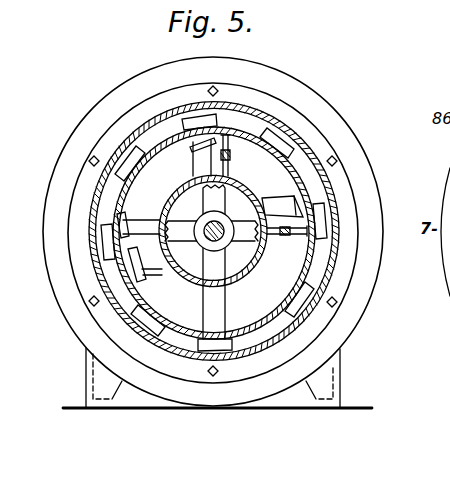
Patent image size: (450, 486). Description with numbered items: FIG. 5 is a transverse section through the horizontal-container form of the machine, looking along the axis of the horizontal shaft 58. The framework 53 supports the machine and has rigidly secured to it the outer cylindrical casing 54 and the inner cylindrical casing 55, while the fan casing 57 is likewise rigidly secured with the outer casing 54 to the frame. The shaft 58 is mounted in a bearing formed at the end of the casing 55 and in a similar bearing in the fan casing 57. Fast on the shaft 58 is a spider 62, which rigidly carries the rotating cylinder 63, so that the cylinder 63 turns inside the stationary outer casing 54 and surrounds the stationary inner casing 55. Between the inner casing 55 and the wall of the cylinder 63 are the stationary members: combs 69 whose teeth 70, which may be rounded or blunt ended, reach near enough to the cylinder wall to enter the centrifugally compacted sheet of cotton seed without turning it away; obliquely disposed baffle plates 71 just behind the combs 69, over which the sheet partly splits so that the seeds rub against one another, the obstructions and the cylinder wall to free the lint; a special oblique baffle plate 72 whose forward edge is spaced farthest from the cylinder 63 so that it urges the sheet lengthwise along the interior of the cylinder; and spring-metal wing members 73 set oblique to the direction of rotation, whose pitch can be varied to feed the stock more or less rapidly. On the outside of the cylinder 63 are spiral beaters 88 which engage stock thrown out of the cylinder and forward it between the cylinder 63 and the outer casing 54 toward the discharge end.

The framework 53 is at (113, 385).
The outer cylindrical casing 54 is at (290, 160).
The inner cylindrical casing 55 is at (249, 182).
The fan casing 57 is at (121, 88).
The horizontal shaft 58 is at (219, 244).
The spider 62 is at (227, 276).
The cylinder 63 is at (117, 188).
The combs 69 is at (238, 150).
The teeth 70 is at (235, 130).
The baffle plates 71 is at (193, 140).
The baffle plate 72 is at (123, 215).
The wing members 73 is at (140, 254).
The spiral beaters 88 is at (130, 160).